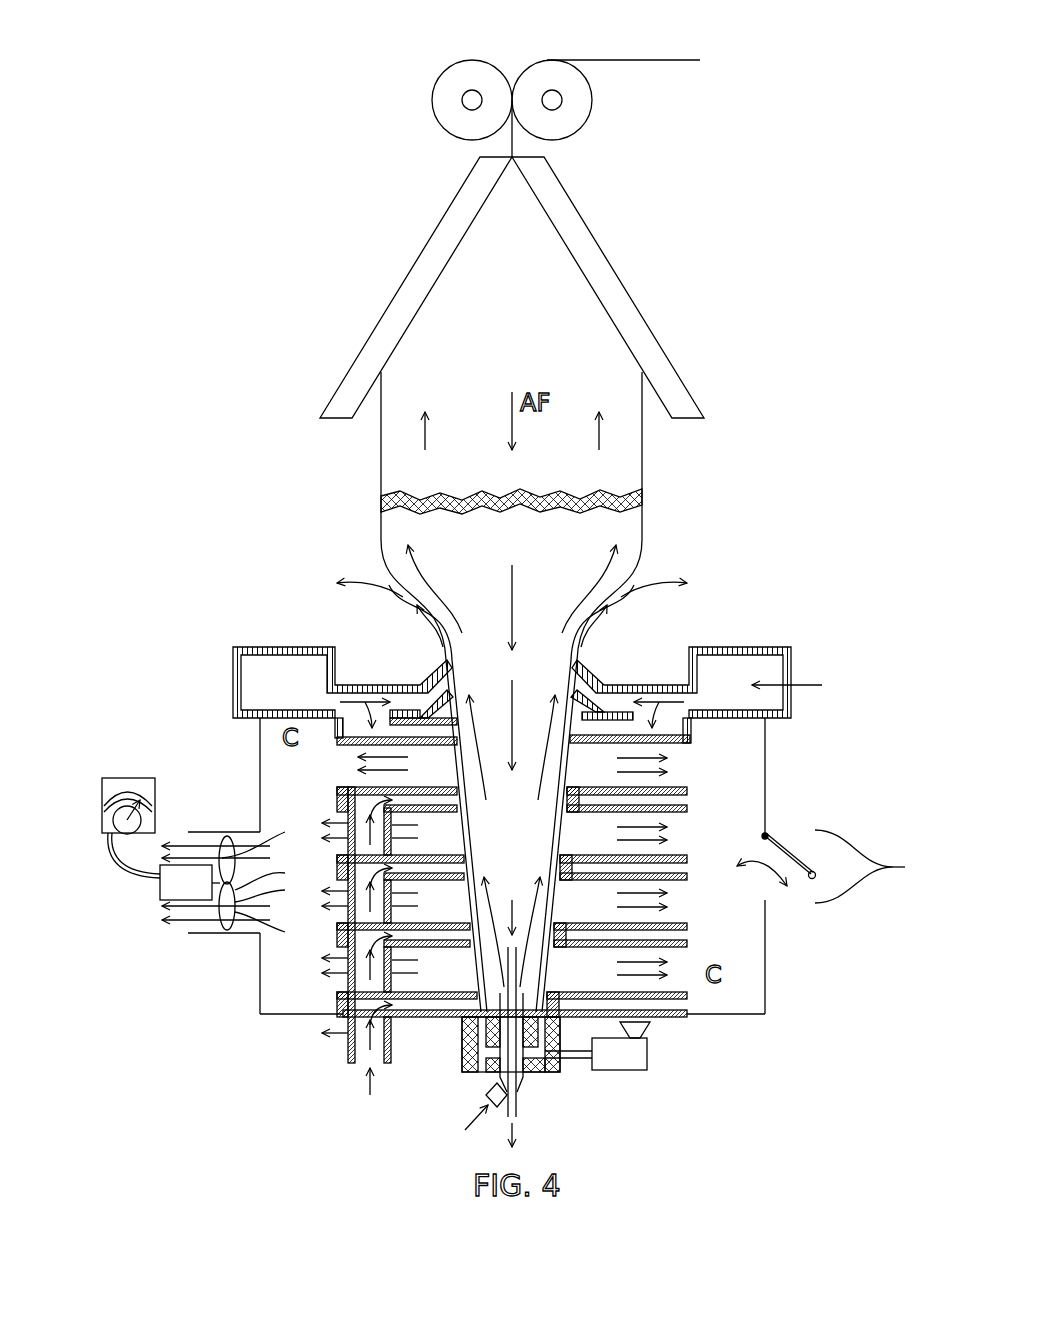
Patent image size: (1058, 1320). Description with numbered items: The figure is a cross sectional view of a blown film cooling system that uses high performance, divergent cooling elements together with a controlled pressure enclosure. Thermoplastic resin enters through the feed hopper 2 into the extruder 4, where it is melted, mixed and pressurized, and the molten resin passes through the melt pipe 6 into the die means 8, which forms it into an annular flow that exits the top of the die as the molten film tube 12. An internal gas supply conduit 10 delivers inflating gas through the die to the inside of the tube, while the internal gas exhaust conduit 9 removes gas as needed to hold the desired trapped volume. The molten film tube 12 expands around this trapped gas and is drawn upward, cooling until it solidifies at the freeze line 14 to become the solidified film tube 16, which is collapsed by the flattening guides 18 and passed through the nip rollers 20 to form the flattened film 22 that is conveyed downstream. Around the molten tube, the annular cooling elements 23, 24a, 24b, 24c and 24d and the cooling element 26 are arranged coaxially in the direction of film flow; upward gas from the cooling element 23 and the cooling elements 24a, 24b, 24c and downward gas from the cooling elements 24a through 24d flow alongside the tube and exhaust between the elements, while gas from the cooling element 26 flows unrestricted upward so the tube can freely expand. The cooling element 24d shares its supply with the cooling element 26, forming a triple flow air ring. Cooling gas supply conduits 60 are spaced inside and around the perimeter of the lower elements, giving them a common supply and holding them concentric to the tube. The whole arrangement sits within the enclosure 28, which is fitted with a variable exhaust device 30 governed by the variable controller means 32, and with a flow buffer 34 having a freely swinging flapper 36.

The feed hopper 2 is at (642, 1030).
The extruder 4 is at (630, 1058).
The melt pipe 6 is at (575, 1058).
The die means 8 is at (462, 1040).
The internal gas exhaust conduit 9 is at (516, 1107).
The internal gas supply conduit 10 is at (490, 1087).
The molten film tube 12 is at (644, 530).
The freeze line 14 is at (644, 497).
The solidified film tube 16 is at (644, 460).
The flattening guides 18 is at (402, 287).
The nip rollers 20 is at (440, 123).
The flattened film 22 is at (585, 60).
The cooling element 23 is at (670, 1000).
The cooling element 24a is at (673, 937).
The cooling element 24b is at (672, 868).
The cooling element 24c is at (675, 800).
The cooling element 24d is at (675, 730).
The cooling element 26 is at (272, 672).
The enclosure 28 is at (256, 968).
The variable exhaust device 30 is at (160, 885).
The variable controller means 32 is at (102, 806).
The flow buffer 34 is at (876, 866).
The freely swinging flapper 36 is at (770, 838).
The cooling gas supply conduits 60 is at (346, 980).